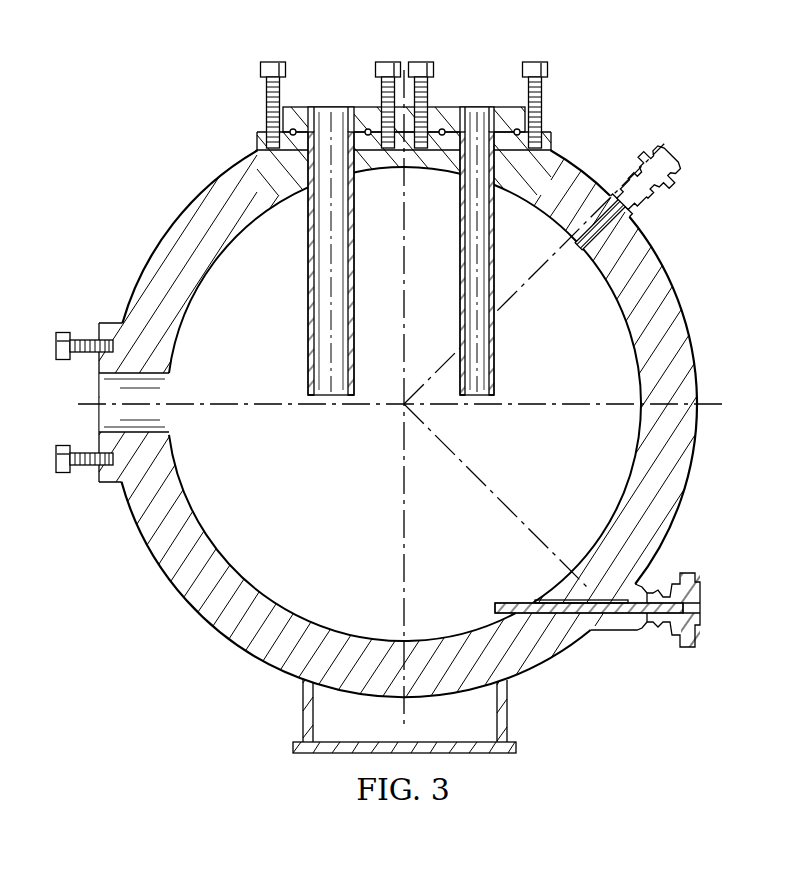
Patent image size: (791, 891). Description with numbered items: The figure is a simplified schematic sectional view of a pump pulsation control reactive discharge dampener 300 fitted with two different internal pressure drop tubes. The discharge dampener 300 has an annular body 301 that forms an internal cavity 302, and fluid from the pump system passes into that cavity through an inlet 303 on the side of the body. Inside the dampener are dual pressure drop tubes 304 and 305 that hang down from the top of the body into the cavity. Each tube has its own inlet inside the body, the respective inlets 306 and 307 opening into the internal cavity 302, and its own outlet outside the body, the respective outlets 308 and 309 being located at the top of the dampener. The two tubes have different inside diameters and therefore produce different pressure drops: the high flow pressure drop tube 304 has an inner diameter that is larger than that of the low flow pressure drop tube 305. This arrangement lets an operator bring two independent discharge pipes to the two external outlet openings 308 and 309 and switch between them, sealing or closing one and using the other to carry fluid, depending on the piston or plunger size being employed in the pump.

The discharge dampener 300 is at (162, 49).
The annular body 301 is at (162, 240).
The internal cavity 302 is at (346, 546).
The inlet 303 is at (112, 388).
The high flow pressure drop tube 304 is at (306, 289).
The low flow pressure drop tube 305 is at (496, 263).
The inlet of high flow pressure drop tube 306 is at (330, 403).
The inlet of low flow pressure drop tube 307 is at (478, 403).
The outlet of high flow pressure drop tube 308 is at (328, 100).
The outlet of low flow pressure drop tube 309 is at (485, 100).